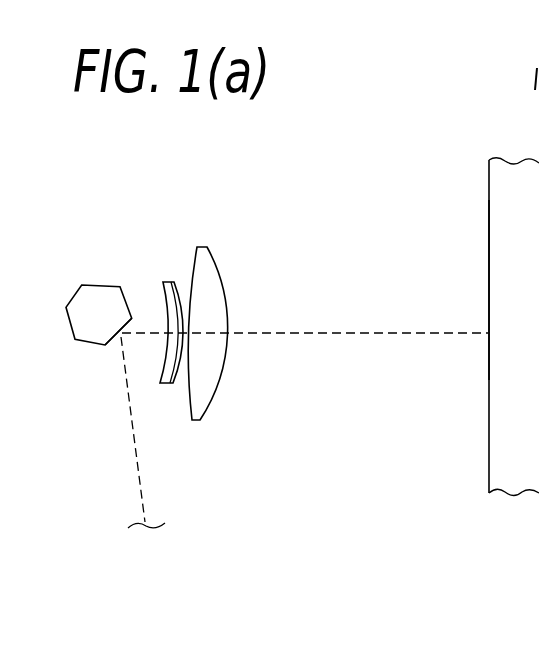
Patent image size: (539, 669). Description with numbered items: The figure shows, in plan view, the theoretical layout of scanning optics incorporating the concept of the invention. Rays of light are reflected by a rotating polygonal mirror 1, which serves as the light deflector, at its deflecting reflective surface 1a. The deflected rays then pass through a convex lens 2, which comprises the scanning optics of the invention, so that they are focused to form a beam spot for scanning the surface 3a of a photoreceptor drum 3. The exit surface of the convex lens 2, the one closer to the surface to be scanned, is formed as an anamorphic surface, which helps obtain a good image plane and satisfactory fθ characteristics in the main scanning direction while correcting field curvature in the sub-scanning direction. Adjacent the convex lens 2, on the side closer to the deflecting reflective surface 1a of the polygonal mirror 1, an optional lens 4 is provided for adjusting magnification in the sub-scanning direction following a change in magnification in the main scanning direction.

The polygonal mirror 1 is at (73, 282).
The deflecting reflective surface 1a is at (118, 345).
The convex lens 2 is at (232, 262).
The photoreceptor drum 3 is at (471, 200).
The surface of photoreceptor drum 3a is at (489, 287).
The lens for adjusting magnification in the sub-scanning direction 4 is at (166, 282).